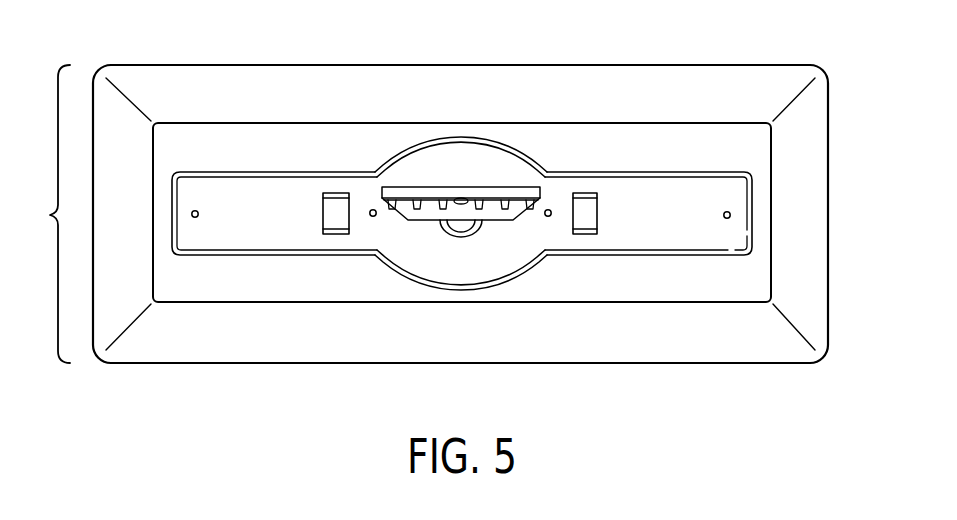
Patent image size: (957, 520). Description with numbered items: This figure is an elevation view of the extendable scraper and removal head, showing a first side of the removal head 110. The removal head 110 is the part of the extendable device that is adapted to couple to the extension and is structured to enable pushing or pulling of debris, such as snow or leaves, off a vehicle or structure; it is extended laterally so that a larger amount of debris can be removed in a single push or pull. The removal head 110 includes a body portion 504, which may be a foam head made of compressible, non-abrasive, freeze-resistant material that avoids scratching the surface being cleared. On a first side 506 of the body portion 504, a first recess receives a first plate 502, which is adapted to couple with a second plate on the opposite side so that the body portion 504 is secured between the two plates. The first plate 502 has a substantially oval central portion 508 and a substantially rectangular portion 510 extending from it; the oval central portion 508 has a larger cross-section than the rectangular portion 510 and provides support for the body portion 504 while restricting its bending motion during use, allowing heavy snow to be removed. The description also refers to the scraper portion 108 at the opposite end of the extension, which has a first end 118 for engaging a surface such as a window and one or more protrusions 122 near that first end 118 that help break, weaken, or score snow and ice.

The removal head 110 is at (43, 214).
The body portion 504 is at (828, 168).
The first side 506 is at (752, 273).
The first plate 502 is at (682, 192).
The substantially rectangular portion 510 is at (262, 173).
The substantially oval central portion 508 is at (462, 138).
The first end 118 is at (473, 192).
The scraper portion 108 is at (397, 209).
The protrusions 122 is at (503, 209).